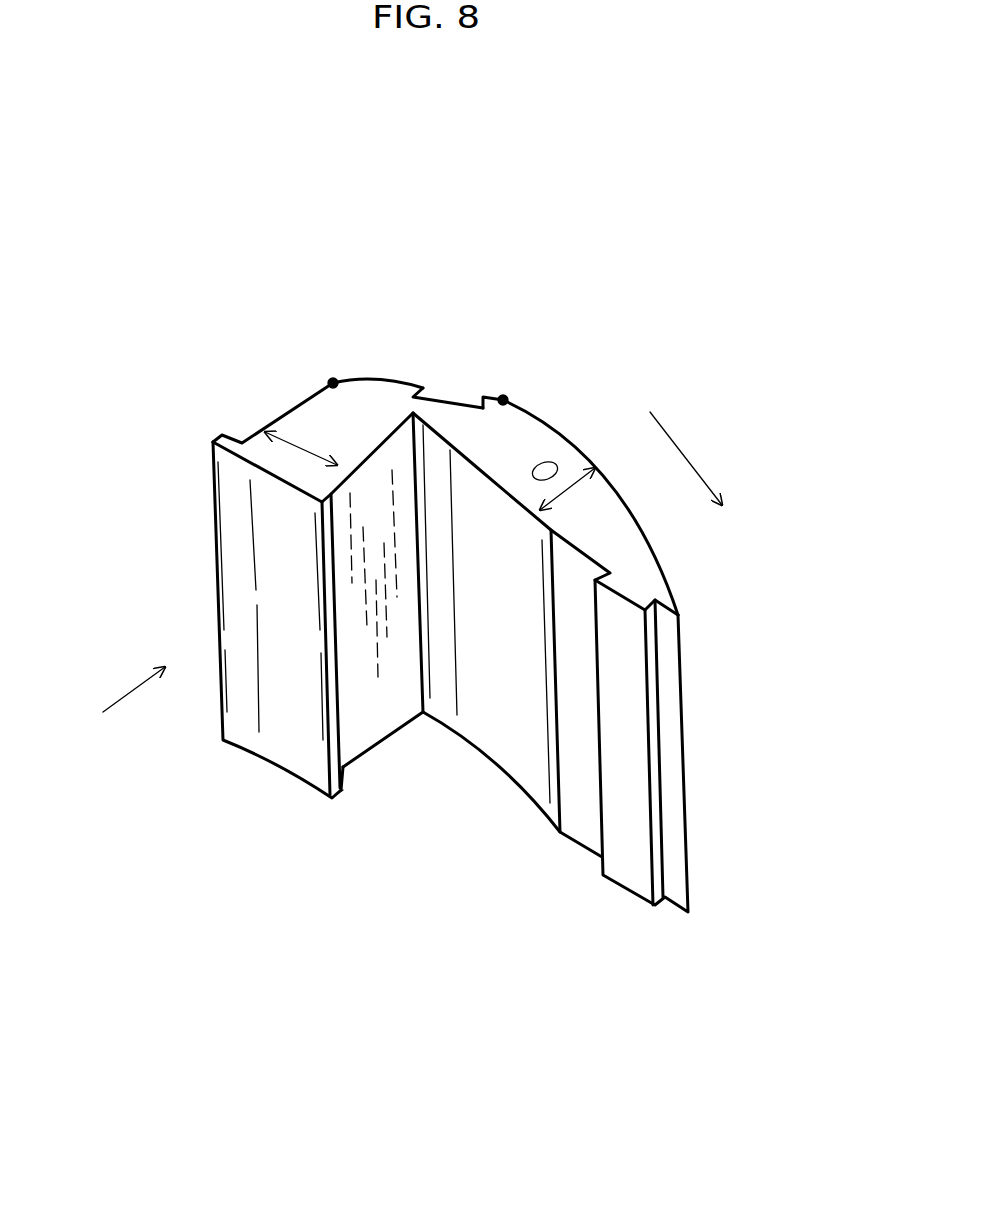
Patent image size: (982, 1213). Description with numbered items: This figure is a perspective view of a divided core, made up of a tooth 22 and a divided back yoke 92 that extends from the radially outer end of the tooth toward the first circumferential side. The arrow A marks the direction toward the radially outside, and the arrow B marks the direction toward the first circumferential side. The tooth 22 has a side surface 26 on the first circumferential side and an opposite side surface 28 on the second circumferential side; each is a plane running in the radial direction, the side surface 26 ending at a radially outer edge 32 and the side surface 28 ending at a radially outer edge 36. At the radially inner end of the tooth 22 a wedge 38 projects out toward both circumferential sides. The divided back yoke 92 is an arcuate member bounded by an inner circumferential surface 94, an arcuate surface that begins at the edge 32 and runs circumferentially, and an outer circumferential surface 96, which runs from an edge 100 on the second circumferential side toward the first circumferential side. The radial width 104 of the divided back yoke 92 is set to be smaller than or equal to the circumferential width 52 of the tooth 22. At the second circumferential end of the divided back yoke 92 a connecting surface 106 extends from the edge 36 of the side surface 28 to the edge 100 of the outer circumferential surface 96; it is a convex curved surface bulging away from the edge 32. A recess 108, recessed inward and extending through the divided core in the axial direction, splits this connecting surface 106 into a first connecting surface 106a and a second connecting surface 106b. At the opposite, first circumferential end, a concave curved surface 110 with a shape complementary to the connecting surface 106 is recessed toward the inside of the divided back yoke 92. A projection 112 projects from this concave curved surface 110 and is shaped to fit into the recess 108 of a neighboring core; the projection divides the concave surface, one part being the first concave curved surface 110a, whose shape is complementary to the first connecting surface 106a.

The tooth 22 is at (313, 417).
The side surface of the first circumferential side 26 is at (362, 708).
The side surface of the second circumferential side 28 is at (282, 413).
The radially outer edge 32 is at (420, 612).
The radially outer edge 36 is at (333, 383).
The wedge 38 is at (222, 435).
The circumferential width of the tooth 52 is at (285, 458).
The divided back yoke 92 is at (520, 443).
The inner circumferential surface 94 is at (503, 705).
The outer circumferential surface 96 is at (657, 550).
The edge 100 is at (503, 400).
The radial width 104 is at (563, 495).
The connecting surface 106 is at (530, 172).
The first connecting surface 106a is at (398, 380).
The second connecting surface 106b is at (495, 397).
The recess 108 is at (452, 402).
The concave curved surface 110 is at (530, 1080).
The first concave curved surface 110a is at (588, 818).
The projection 112 is at (625, 738).
The arrow A is at (123, 695).
The arrow B is at (683, 447).